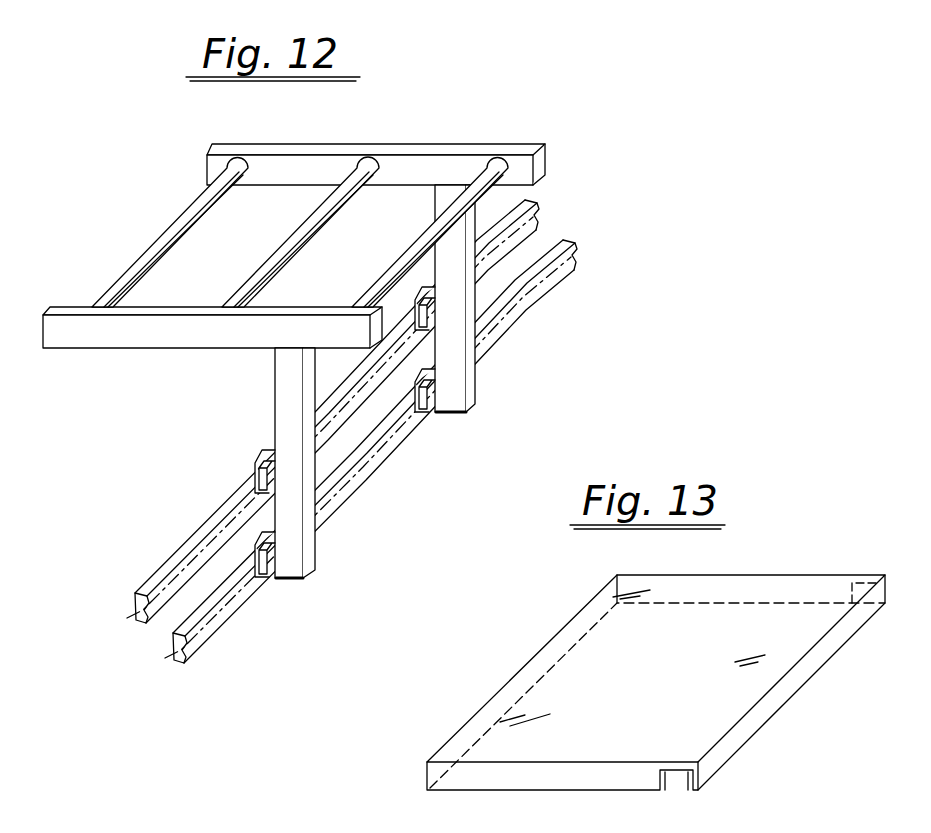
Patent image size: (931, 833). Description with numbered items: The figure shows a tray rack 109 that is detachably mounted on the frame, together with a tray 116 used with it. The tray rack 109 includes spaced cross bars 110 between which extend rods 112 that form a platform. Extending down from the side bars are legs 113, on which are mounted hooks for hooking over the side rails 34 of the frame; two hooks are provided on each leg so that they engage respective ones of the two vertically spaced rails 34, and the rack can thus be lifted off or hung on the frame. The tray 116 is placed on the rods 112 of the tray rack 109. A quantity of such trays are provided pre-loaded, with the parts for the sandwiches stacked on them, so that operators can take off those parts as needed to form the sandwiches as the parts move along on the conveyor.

In FIG. 12, the side rails 34 is at (212, 607).
In FIG. 12, the tray rack 109 is at (294, 319).
In FIG. 12, the cross bars 110 is at (268, 170).
In FIG. 12, the rods 112 is at (298, 238).
In FIG. 12, the legs 113 is at (453, 413).
In FIG. 13, the tray 116 is at (815, 675).